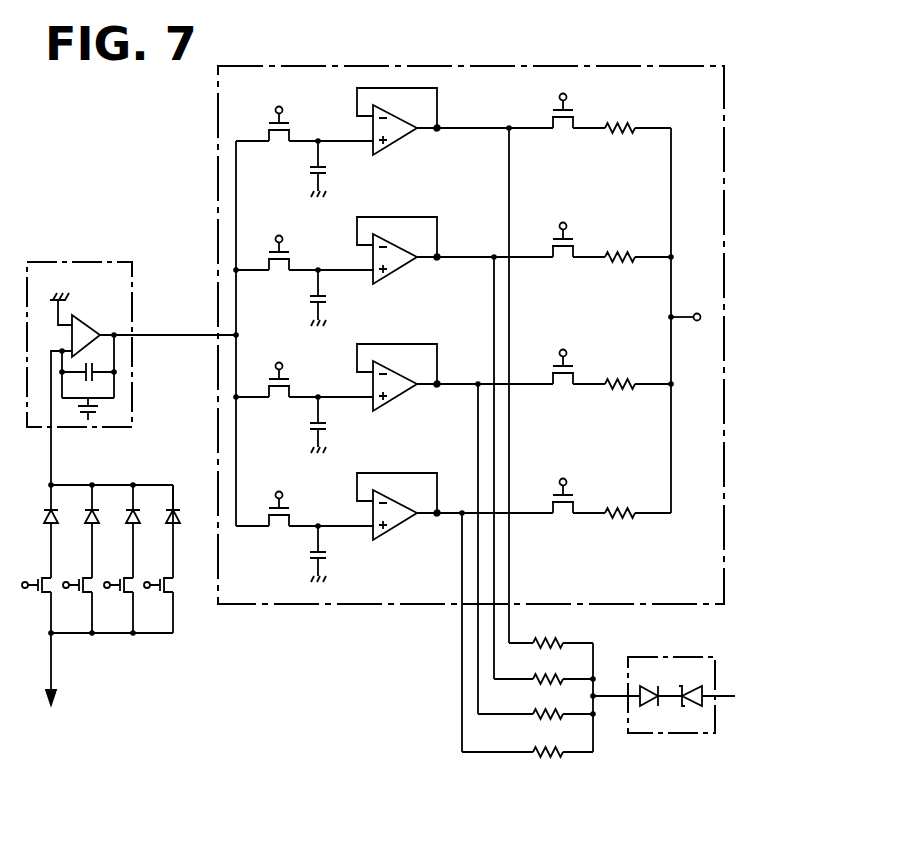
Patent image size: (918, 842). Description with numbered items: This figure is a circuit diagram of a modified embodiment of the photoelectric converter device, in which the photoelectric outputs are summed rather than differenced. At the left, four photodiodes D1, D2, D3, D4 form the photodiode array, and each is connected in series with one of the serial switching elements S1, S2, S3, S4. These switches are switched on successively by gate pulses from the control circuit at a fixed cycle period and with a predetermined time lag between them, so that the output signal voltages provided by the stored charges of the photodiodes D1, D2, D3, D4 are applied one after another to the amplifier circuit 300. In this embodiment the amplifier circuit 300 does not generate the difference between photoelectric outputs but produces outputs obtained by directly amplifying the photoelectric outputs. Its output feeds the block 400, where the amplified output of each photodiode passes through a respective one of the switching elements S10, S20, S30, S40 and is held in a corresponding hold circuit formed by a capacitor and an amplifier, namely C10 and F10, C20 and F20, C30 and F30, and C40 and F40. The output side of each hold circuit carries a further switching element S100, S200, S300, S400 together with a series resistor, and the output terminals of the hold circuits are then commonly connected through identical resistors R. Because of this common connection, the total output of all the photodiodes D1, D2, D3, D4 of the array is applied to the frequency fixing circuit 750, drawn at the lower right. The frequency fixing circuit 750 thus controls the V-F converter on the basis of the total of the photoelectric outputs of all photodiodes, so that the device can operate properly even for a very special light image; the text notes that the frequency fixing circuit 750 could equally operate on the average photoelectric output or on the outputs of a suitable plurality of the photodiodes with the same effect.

The hold circuit block 400 is at (491, 66).
The amplifier circuit 300 is at (86, 262).
The frequency fixing circuit 750 is at (651, 733).
The switching element S10 is at (276, 144).
The switching element S20 is at (276, 273).
The switching element S30 is at (276, 400).
The switching element S40 is at (276, 529).
The hold capacitor C10 is at (326, 170).
The hold capacitor C20 is at (326, 299).
The hold capacitor C30 is at (326, 426).
The hold capacitor C40 is at (326, 555).
The hold amplifier F10 is at (395, 140).
The hold amplifier F20 is at (395, 269).
The hold amplifier F30 is at (395, 396).
The hold amplifier F40 is at (395, 525).
The output switching element S100 is at (560, 131).
The output switching element S200 is at (560, 260).
The output switching element S300 is at (560, 387).
The output switching element S400 is at (560, 516).
The photodiode D1 is at (54, 524).
The photodiode D2 is at (95, 524).
The photodiode D3 is at (136, 524).
The photodiode D4 is at (176, 524).
The serial switching element S1 is at (41, 594).
The serial switching element S2 is at (82, 594).
The serial switching element S3 is at (123, 594).
The serial switching element S4 is at (163, 594).
The resistor R is at (557, 641).